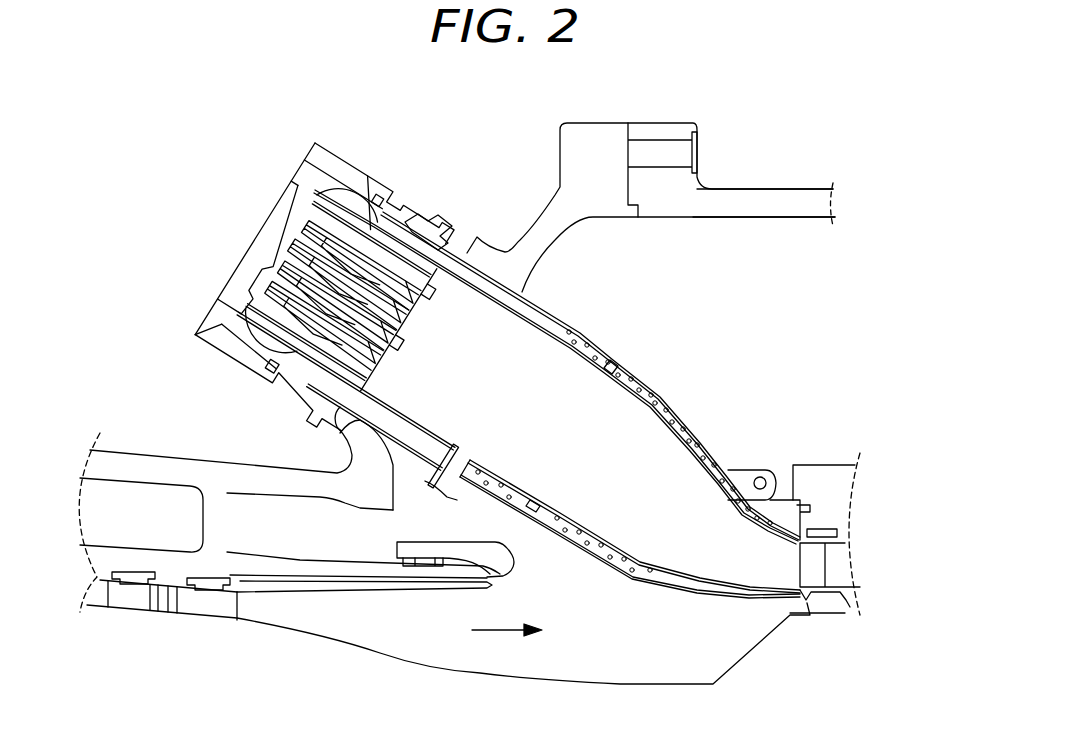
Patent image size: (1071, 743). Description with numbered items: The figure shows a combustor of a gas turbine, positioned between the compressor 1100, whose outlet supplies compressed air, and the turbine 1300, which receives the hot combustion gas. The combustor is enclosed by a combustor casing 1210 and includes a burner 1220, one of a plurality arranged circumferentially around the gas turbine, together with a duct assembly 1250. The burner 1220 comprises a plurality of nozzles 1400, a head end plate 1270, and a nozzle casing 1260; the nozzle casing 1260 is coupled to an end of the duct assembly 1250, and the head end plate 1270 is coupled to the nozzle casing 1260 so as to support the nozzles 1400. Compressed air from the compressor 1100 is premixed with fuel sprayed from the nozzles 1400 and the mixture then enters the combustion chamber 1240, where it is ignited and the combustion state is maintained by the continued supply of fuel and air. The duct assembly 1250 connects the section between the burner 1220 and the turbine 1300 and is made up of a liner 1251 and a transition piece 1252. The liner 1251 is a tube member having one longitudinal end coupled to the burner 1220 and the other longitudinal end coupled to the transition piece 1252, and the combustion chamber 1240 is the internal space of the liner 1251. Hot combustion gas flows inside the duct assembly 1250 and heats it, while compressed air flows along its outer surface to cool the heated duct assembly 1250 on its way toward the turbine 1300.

The compressor 1100 is at (127, 612).
The combustor casing 1210 is at (748, 182).
The burner 1220 is at (274, 236).
The combustion chamber 1240 is at (440, 338).
The duct assembly 1250 is at (574, 360).
The liner 1251 is at (580, 331).
The transition piece 1252 is at (650, 381).
The nozzle casing 1260 is at (349, 172).
The head end plate 1270 is at (302, 188).
The turbine 1300 is at (832, 568).
The nozzle 1400 is at (395, 246).